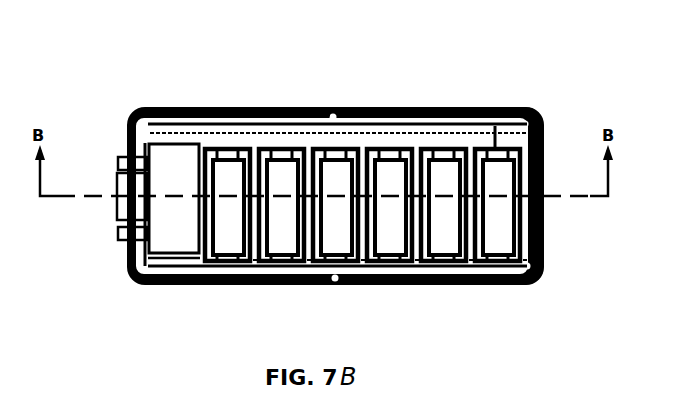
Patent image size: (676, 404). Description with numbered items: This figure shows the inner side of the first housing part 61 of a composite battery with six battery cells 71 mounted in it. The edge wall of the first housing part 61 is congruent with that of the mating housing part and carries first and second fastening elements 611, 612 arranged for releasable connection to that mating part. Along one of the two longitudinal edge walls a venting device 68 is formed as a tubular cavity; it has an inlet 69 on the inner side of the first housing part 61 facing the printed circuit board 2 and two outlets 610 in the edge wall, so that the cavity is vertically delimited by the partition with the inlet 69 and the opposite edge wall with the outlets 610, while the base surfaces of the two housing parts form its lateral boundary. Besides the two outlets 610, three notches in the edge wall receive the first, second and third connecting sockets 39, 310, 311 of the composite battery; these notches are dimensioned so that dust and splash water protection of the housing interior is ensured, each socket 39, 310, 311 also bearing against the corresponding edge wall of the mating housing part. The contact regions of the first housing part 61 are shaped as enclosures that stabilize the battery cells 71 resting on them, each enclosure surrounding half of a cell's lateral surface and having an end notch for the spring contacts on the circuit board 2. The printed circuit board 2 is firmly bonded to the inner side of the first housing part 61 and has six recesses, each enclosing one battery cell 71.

The printed circuit board 2 is at (163, 137).
The first connecting socket 39 is at (118, 158).
The third connecting socket 311 is at (120, 185).
The second connecting socket 310 is at (120, 237).
The first housing part 61 is at (265, 285).
The venting device 68 is at (253, 108).
The inlet 69 is at (355, 120).
The battery cell 71 is at (442, 172).
The outlet 610 is at (500, 108).
The first fastening element 611 is at (532, 278).
The second fastening element 612 is at (488, 282).